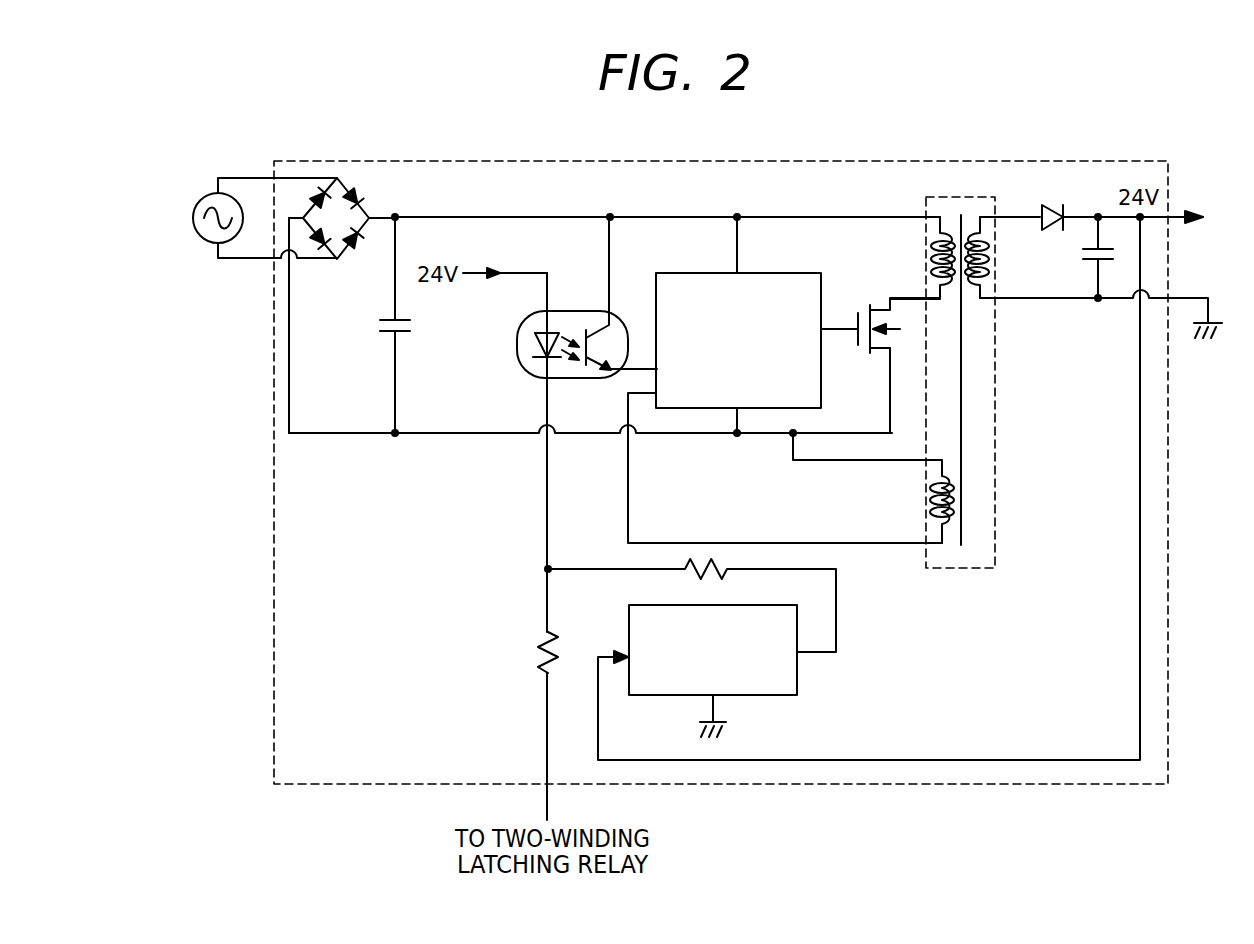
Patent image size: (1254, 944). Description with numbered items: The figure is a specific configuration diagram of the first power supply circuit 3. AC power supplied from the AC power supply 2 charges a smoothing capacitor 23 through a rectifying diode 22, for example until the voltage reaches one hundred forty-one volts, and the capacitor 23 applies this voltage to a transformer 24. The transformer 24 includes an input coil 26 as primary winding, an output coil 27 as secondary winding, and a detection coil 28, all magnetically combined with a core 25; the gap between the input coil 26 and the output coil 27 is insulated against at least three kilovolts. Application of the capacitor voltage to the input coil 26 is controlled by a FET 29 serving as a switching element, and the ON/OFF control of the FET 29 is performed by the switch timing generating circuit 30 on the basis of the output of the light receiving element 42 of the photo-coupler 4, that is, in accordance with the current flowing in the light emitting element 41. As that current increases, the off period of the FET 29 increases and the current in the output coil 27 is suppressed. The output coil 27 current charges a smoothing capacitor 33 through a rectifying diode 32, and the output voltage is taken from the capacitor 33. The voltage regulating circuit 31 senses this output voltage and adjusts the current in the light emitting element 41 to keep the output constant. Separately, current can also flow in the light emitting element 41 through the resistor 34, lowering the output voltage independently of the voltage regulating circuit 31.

The AC power supply 2 is at (200, 202).
The first power supply circuit 3 is at (818, 161).
The photo-coupler 4 is at (561, 297).
The rectifying diode 22 is at (341, 185).
The smoothing capacitor 23 is at (385, 335).
The transformer 24 is at (920, 355).
The core 25 is at (963, 398).
The input coil 26 is at (935, 240).
The output coil 27 is at (985, 240).
The detection coil 28 is at (935, 518).
The FET 29 is at (866, 352).
The switch timing generating circuit 30 is at (823, 284).
The voltage regulating circuit 31 is at (798, 677).
The rectifying diode 32 is at (1052, 205).
The smoothing capacitor 33 is at (1085, 262).
The resistor 34 is at (540, 650).
The light emitting element 41 is at (528, 346).
The light receiving element 42 is at (614, 338).